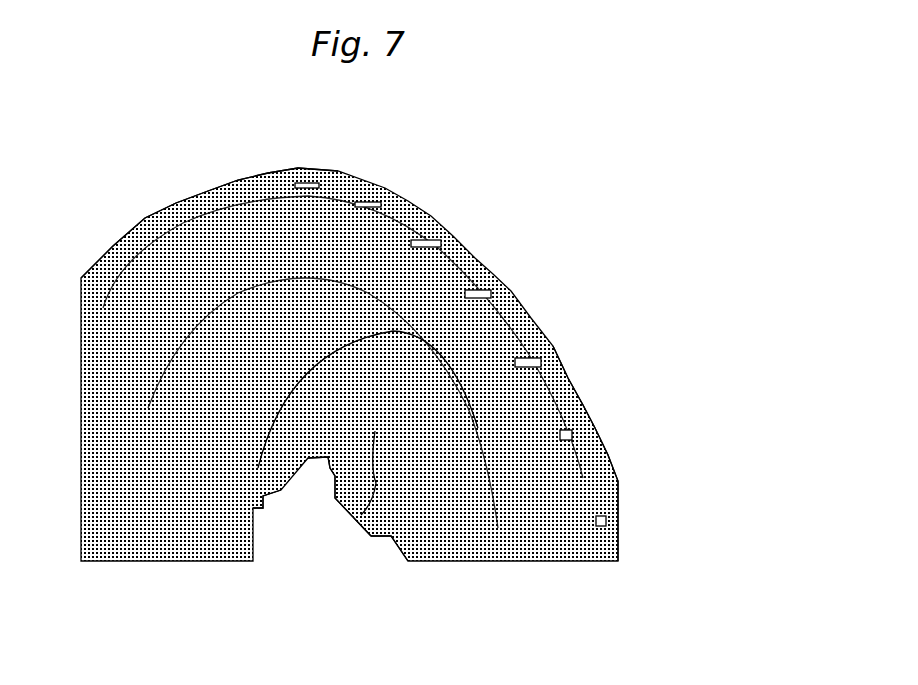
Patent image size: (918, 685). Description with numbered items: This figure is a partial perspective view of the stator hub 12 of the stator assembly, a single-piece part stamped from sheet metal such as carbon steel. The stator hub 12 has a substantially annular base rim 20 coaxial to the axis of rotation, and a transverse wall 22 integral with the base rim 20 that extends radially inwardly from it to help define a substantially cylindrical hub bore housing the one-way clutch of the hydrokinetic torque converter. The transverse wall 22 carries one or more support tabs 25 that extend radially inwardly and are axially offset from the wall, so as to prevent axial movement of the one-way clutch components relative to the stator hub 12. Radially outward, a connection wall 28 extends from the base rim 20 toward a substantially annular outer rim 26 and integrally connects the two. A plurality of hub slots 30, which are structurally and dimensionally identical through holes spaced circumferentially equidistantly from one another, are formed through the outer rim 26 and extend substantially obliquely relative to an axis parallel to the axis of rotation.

The stator hub 12 is at (570, 240).
The base rim 20 is at (385, 323).
The transverse wall 22 is at (347, 513).
The support tabs 25 is at (273, 487).
The outer rim 26 is at (583, 466).
The connection wall 28 is at (170, 278).
The hub slots 30 is at (377, 180).